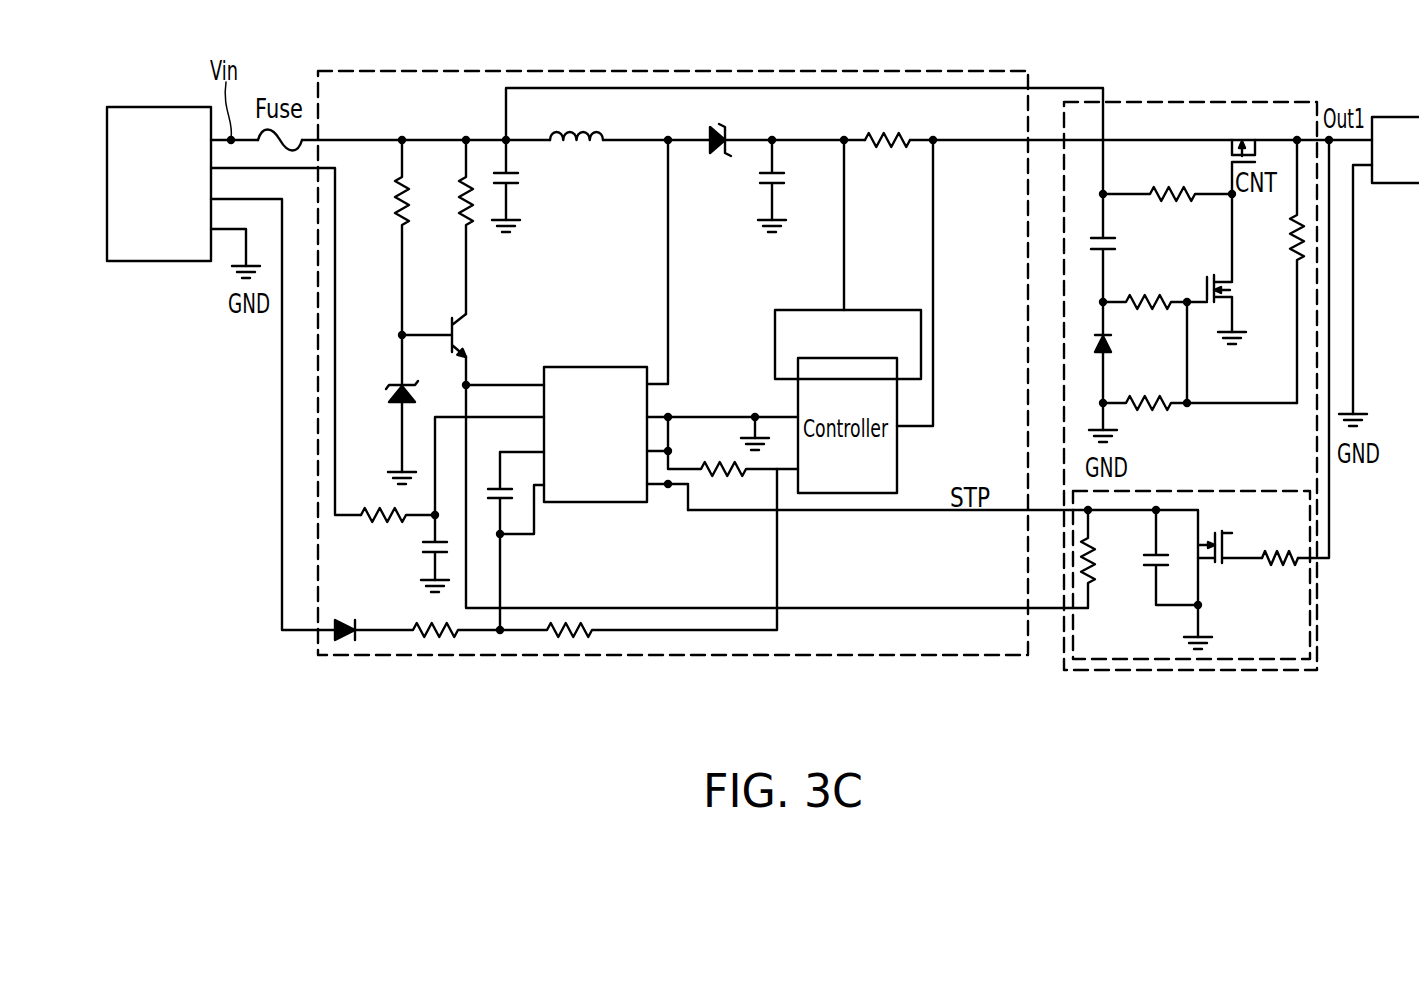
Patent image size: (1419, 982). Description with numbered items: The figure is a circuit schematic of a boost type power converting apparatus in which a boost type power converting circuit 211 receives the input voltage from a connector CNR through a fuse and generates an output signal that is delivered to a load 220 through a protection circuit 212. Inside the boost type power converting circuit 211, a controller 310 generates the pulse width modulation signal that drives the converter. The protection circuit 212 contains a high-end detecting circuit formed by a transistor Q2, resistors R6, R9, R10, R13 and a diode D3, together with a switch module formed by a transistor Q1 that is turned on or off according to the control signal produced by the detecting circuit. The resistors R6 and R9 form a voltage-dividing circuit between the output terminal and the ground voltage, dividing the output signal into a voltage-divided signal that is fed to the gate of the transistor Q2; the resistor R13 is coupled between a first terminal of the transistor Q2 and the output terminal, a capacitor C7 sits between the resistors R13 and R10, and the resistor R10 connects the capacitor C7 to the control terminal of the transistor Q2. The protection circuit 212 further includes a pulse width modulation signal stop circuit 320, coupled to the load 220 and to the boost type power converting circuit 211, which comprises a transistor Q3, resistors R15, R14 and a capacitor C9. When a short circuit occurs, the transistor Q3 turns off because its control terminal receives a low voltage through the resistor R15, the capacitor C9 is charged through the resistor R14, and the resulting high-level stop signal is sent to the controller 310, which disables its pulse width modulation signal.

The boost type power converting circuit 211 is at (988, 658).
The protection circuit 212 is at (1212, 100).
The load 220 is at (1398, 115).
The controller 310 is at (590, 502).
The pulse width modulation signal stop circuit 320 is at (1140, 672).
The connector CNR is at (180, 261).
The transistor Q1 is at (1244, 149).
The transistor Q2 is at (1237, 263).
The transistor Q3 is at (1230, 540).
The resistor R6 is at (1280, 271).
The resistor R9 is at (1200, 391).
The resistor R10 is at (1155, 289).
The resistor R13 is at (1167, 177).
The resistor R14 is at (1109, 558).
The resistor R15 is at (1281, 576).
The capacitor C7 is at (1121, 279).
The capacitor C9 is at (1171, 557).
The diode D3 is at (1123, 380).